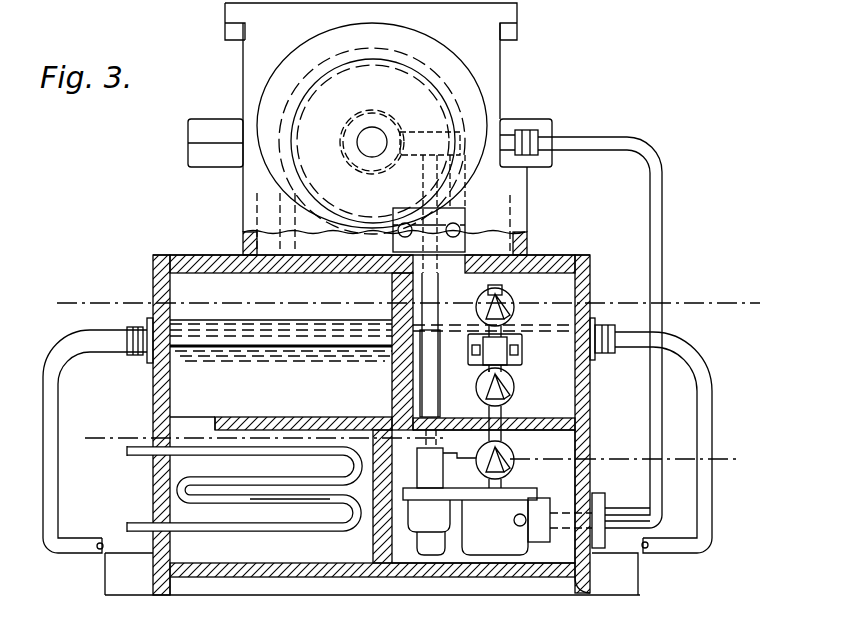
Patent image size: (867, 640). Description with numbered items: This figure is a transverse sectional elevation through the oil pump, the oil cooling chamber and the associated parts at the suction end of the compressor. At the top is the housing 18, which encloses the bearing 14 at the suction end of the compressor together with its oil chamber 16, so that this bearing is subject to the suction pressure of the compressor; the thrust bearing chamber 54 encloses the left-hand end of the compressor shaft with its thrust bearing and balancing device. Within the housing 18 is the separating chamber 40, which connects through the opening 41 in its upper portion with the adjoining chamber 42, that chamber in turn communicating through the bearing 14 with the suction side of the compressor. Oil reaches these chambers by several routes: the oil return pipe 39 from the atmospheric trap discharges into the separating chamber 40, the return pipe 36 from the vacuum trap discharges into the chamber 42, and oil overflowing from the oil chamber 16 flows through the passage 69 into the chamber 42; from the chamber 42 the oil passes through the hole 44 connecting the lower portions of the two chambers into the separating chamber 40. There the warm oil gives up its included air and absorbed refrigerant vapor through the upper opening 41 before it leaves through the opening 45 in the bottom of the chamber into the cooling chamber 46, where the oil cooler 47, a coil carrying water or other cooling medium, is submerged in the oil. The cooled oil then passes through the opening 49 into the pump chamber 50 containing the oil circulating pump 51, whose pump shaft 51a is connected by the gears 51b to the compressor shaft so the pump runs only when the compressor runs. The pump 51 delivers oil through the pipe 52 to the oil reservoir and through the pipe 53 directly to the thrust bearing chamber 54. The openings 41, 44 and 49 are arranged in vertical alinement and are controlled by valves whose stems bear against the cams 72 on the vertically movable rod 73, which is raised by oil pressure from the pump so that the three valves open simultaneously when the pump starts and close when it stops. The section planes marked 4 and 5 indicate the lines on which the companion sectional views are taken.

The bearing 14 is at (428, 93).
The oil chamber 16 is at (495, 235).
The housing 18 is at (252, 68).
The return pipe 36 is at (712, 397).
The oil return pipe 39 is at (45, 391).
The separating chamber 40 is at (372, 320).
The opening 41 is at (499, 310).
The chamber 42 is at (586, 284).
The hole 44 is at (513, 387).
The opening 45 is at (203, 417).
The cooling chamber 46 is at (242, 503).
The oil cooler 47 is at (237, 498).
The opening 49 is at (511, 455).
The pump chamber 50 is at (486, 496).
The oil circulating pump 51 is at (476, 501).
The pump shaft 51a is at (432, 283).
The gears 51b is at (381, 161).
The pipe 52 is at (628, 519).
The pipe 53 is at (653, 467).
The thrust bearing chamber 54 is at (373, 141).
The passage 69 is at (497, 265).
The cams 72 is at (488, 386).
The rod 73 is at (505, 414).
The section line 4- 4 is at (397, 302).
The section line 5- 5 is at (411, 446).